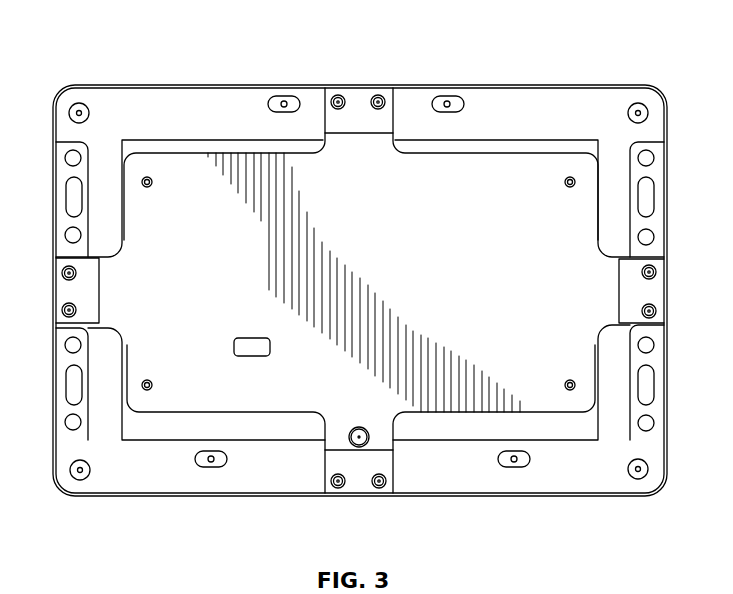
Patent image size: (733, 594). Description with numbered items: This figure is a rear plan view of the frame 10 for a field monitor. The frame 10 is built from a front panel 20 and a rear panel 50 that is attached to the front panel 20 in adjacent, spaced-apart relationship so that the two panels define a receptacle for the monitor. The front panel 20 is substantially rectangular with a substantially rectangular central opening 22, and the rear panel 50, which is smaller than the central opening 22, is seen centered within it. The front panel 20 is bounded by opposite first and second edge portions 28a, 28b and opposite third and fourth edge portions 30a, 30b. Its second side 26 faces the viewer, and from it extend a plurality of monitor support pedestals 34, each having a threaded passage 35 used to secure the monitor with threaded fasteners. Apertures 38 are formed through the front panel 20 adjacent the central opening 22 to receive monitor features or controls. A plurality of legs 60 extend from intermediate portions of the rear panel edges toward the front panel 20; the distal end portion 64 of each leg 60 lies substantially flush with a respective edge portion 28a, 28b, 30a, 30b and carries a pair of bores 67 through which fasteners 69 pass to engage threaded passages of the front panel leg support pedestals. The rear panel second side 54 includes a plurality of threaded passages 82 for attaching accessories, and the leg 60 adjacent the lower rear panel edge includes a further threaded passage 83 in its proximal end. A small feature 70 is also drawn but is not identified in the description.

The frame 10 is at (500, 54).
The front panel 20 is at (557, 87).
The central opening 22 is at (178, 154).
The second side 26 is at (152, 119).
The first edge portion 28a is at (55, 417).
The second edge portion 28b is at (667, 364).
The third edge portion 30a is at (236, 87).
The fourth edge portion 30b is at (484, 497).
The monitor support pedestal 34 is at (89, 111).
The threaded passage 35 is at (83, 116).
The aperture 38 is at (66, 197).
The rear panel 50 is at (550, 175).
The second side 54 is at (459, 186).
The leg 60 is at (360, 90).
The distal end portion 64 is at (334, 96).
The bore 67 is at (340, 94).
The fastener 69 is at (340, 110).
The tab 70 is at (251, 357).
The threaded passage 82 is at (153, 182).
The threaded passage 83 is at (352, 428).